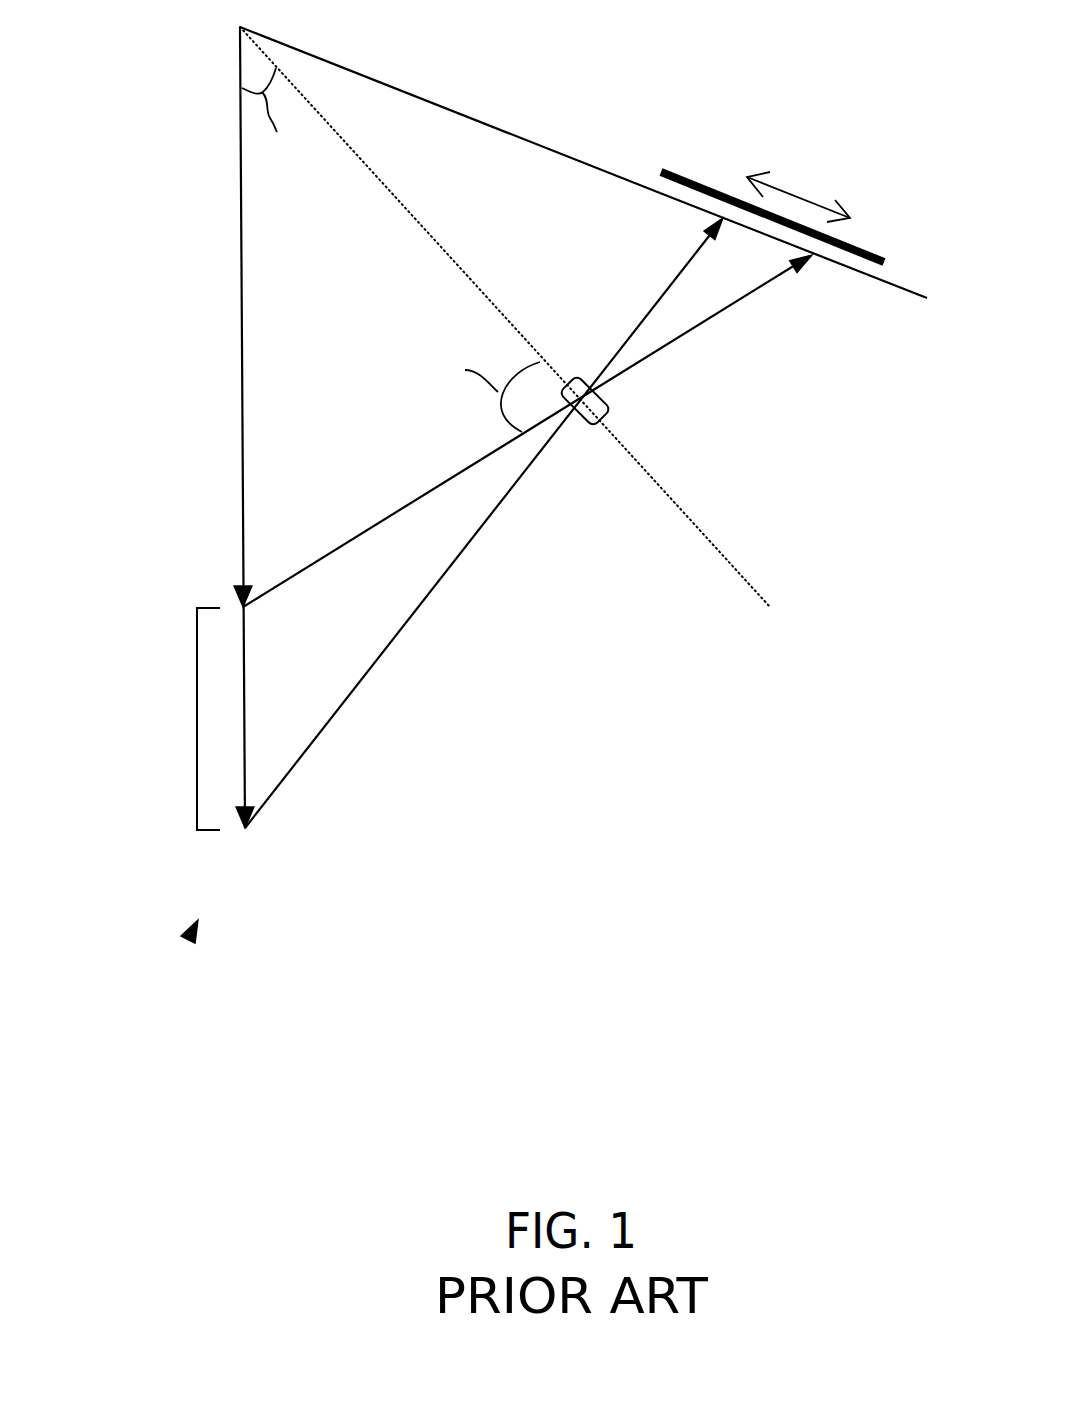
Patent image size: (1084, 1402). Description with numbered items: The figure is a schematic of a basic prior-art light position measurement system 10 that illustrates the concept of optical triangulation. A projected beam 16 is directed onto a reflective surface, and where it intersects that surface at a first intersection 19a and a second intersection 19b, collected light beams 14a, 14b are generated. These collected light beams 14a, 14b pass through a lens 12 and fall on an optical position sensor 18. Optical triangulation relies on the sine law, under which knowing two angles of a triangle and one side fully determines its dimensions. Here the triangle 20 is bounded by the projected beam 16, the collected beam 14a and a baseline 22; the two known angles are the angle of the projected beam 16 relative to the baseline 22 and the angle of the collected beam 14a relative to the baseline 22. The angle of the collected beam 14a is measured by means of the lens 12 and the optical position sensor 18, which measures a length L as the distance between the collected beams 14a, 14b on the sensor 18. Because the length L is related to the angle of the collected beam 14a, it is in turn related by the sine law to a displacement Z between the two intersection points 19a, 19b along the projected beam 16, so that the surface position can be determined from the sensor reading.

The light position measurement system 10 is at (190, 938).
The lens 12 is at (612, 408).
The collected light beam 14a is at (358, 537).
The collected light beam 14b is at (398, 637).
The projected beam 16 is at (240, 308).
The optical position sensor 18 is at (885, 255).
The intersection of projected beam with reflective surface 19a is at (240, 605).
The intersection of projected beam with reflective surface 19b is at (250, 830).
The triangle 20 is at (371, 339).
The baseline 22 is at (425, 233).
The length L is at (795, 195).
The displacement Z is at (197, 720).